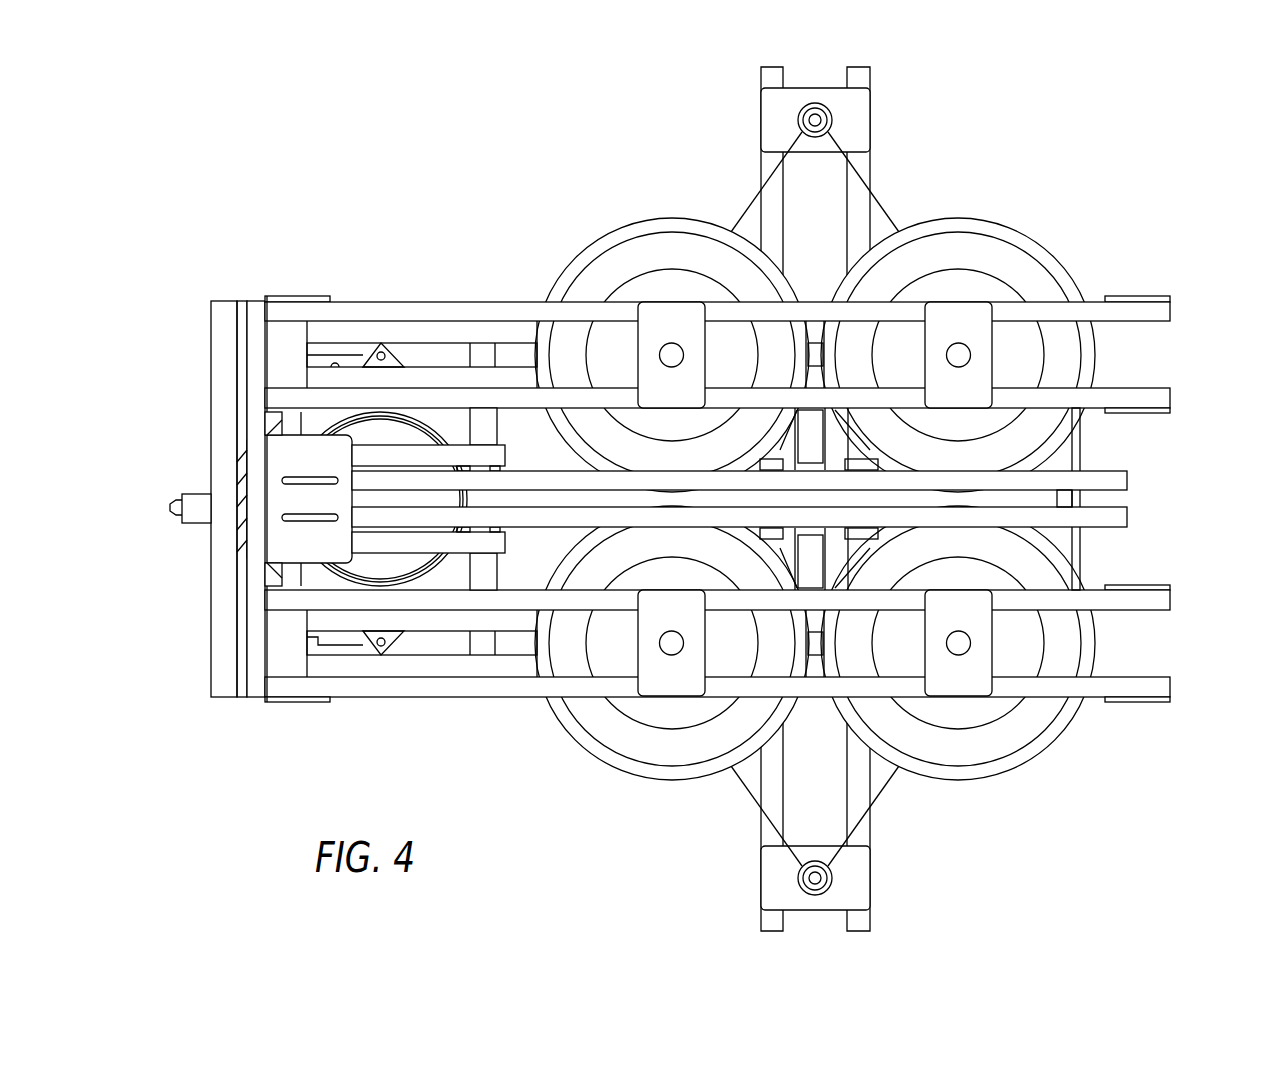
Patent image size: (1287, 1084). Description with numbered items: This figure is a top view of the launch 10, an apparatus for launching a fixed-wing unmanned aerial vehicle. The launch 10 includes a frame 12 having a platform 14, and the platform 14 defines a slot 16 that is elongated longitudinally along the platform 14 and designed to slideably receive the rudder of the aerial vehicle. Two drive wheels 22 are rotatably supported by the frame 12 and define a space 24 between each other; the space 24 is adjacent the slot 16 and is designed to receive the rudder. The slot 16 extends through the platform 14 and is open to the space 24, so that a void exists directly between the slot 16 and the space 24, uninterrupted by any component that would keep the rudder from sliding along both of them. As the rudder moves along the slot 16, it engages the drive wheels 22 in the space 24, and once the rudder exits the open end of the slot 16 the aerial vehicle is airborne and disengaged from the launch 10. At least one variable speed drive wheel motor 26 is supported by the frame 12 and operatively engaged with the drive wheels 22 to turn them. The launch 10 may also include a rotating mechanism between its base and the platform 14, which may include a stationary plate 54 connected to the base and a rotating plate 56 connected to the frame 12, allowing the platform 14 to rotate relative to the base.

The launch 10 is at (703, 499).
The frame 12 is at (1146, 265).
The platform 14 is at (1136, 517).
The slot 16 is at (1113, 498).
The drive wheels 22 is at (598, 218).
The space 24 is at (667, 498).
The variable speed drive wheel motor 26 is at (860, 105).
The stationary plate 54 is at (370, 643).
The rotating plate 56 is at (387, 428).